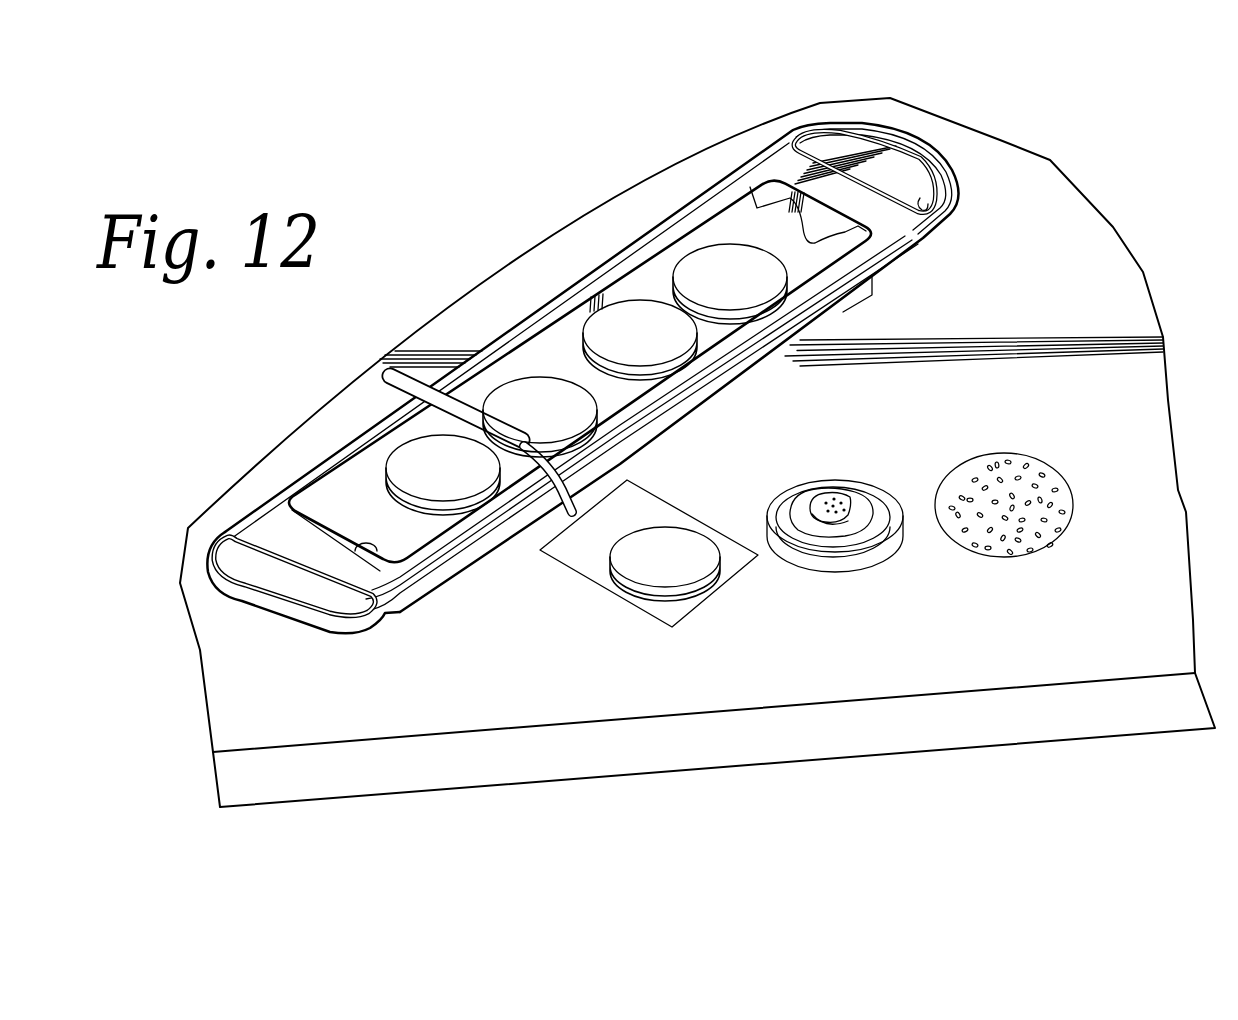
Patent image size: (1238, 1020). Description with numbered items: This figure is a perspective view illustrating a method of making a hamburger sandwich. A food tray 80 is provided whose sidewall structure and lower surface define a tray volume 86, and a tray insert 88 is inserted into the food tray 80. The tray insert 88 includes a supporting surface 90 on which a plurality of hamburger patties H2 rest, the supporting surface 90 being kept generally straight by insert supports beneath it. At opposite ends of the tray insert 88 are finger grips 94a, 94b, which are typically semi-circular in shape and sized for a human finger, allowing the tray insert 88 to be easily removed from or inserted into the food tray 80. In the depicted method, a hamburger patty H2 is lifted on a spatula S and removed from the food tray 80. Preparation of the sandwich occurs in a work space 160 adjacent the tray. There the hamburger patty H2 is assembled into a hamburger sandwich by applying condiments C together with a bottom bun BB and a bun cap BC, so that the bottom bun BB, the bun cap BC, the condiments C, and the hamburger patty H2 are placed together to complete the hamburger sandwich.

The food tray 80 is at (926, 157).
The tray volume 86 is at (310, 522).
The tray insert 88 is at (553, 363).
The supporting surface 90 is at (374, 531).
The finger grip 94a is at (372, 553).
The finger grip 94b is at (798, 238).
The spatula S is at (604, 536).
The hamburger patty H2 is at (680, 574).
The condiments C is at (850, 506).
The bottom bun BB is at (845, 575).
The bun cap BC is at (1050, 463).
The work space 160 is at (1130, 653).